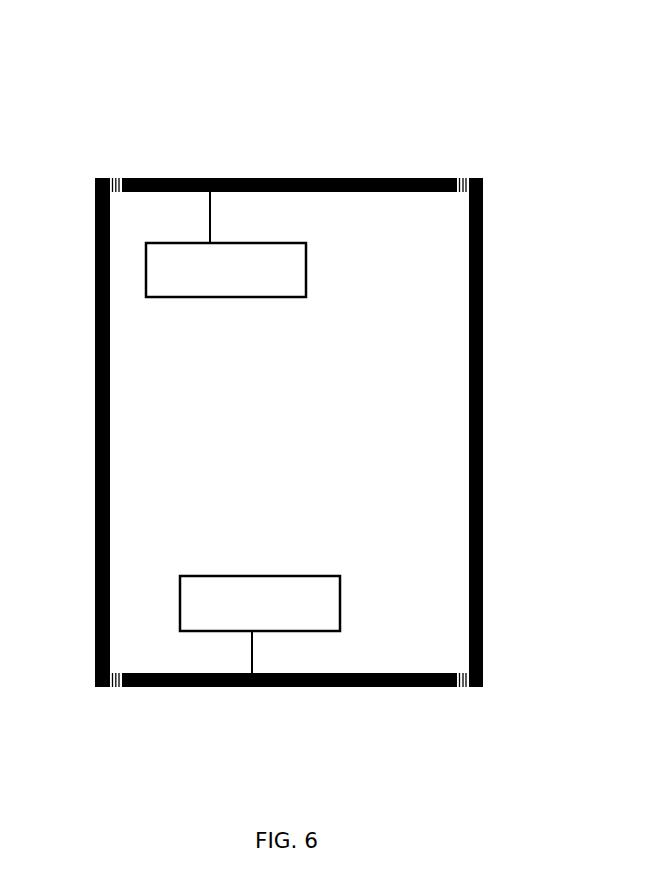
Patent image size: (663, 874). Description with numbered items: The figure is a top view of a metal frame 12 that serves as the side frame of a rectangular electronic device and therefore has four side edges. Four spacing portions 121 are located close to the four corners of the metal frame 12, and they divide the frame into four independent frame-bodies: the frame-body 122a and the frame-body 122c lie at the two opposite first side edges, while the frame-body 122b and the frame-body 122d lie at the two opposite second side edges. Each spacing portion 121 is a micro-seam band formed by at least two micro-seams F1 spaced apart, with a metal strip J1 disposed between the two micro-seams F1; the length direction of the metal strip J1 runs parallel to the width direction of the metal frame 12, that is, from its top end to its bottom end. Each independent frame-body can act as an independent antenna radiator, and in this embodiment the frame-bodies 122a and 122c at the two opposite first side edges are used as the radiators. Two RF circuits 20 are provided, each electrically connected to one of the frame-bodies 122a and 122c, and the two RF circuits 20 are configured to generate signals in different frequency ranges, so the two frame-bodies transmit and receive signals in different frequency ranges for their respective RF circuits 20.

The metal frame 12 is at (394, 79).
The spacing portion 121 is at (120, 134).
The micro-seam F1 is at (112, 178).
The metal strip J1 is at (116, 178).
The frame-body 122a is at (280, 178).
The frame-body 122b is at (95, 462).
The frame-body 122c is at (347, 687).
The frame-body 122d is at (483, 352).
The RF circuit 20 is at (306, 271).